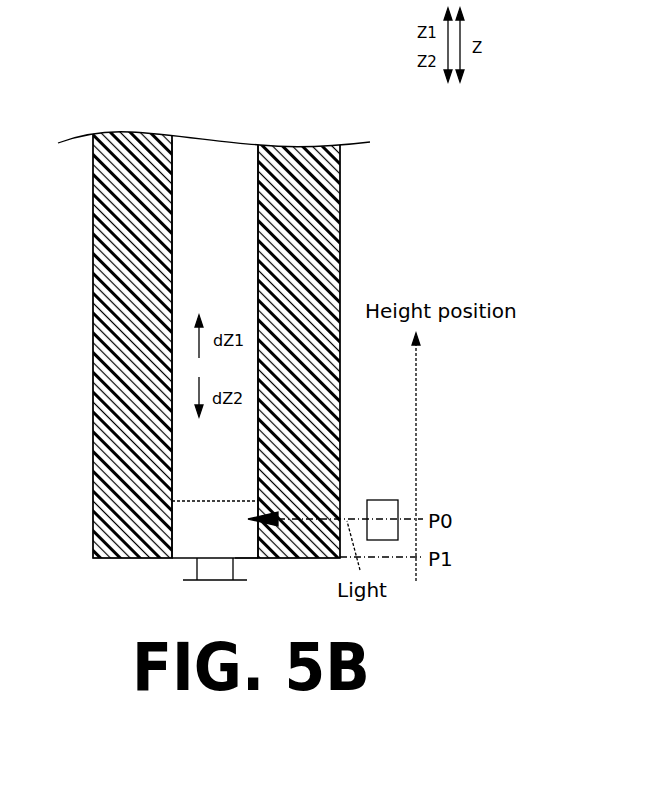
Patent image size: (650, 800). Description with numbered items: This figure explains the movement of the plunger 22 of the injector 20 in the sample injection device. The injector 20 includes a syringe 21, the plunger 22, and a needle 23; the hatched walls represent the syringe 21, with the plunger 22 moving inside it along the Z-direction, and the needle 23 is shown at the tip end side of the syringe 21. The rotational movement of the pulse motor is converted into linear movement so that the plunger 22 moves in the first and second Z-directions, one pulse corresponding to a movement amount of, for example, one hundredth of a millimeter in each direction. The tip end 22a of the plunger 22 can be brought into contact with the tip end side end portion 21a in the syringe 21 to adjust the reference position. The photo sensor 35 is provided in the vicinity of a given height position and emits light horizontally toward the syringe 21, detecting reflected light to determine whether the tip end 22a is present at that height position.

The injector 20 is at (107, 100).
The syringe 21 is at (92, 362).
The plunger 22 is at (216, 150).
The tip end of the plunger 22a is at (220, 501).
The tip end side end portion in the syringe 21a is at (243, 548).
The needle 23 is at (195, 565).
The photo sensor 35 is at (377, 500).